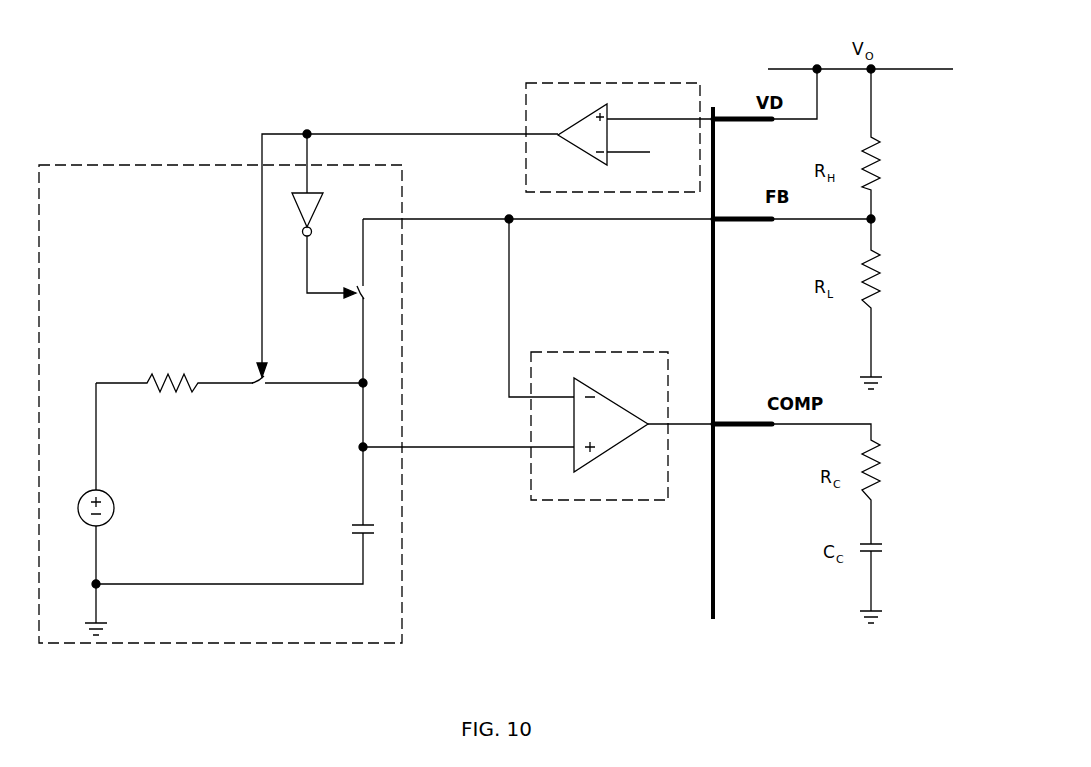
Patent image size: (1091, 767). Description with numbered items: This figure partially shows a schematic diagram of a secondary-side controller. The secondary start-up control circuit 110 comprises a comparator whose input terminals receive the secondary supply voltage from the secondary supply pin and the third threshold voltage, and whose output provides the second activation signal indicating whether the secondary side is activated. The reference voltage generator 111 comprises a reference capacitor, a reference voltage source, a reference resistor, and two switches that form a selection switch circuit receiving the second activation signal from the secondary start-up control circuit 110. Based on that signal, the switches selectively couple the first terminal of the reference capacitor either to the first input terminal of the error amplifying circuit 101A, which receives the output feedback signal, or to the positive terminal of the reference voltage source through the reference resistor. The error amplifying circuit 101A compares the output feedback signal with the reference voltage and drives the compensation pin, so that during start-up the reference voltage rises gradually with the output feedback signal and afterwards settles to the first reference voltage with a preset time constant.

The reference voltage generator 111 is at (97, 164).
The secondary start-up control circuit 110 is at (597, 64).
The error amplifying circuit 101A is at (587, 500).